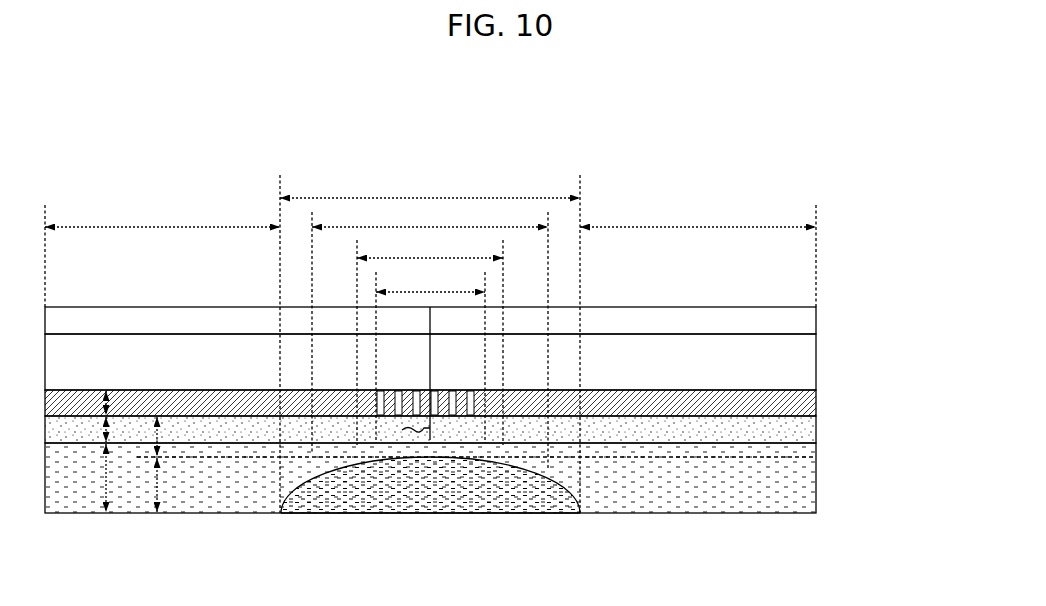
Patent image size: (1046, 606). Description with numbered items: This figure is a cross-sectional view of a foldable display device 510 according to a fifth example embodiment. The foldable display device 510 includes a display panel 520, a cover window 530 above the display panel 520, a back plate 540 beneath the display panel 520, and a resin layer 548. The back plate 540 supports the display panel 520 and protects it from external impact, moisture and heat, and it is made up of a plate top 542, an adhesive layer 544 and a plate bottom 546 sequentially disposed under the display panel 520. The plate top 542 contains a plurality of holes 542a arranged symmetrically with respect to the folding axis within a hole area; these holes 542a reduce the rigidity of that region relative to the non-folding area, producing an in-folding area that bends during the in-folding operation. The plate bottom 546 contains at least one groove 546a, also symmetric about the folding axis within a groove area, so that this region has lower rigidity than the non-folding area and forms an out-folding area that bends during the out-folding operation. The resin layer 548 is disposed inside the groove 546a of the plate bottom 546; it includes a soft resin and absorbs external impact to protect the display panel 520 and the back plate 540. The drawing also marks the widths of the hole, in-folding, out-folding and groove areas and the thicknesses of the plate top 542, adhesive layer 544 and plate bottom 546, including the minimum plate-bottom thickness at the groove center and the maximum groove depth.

The foldable display device 510 is at (415, 118).
The cover window 530 is at (818, 324).
The display panel 520 is at (818, 364).
The back plate 540 is at (497, 462).
The plate top 542 is at (468, 381).
The holes 542a is at (417, 387).
The adhesive layer 544 is at (818, 432).
The plate bottom 546 is at (468, 511).
The groove 546a is at (385, 494).
The resin layer 548 is at (475, 514).